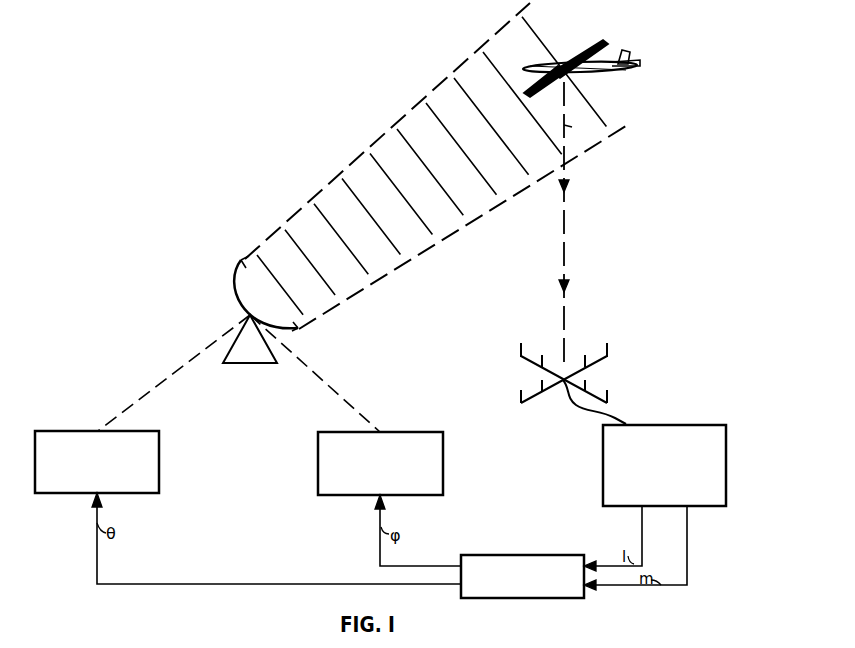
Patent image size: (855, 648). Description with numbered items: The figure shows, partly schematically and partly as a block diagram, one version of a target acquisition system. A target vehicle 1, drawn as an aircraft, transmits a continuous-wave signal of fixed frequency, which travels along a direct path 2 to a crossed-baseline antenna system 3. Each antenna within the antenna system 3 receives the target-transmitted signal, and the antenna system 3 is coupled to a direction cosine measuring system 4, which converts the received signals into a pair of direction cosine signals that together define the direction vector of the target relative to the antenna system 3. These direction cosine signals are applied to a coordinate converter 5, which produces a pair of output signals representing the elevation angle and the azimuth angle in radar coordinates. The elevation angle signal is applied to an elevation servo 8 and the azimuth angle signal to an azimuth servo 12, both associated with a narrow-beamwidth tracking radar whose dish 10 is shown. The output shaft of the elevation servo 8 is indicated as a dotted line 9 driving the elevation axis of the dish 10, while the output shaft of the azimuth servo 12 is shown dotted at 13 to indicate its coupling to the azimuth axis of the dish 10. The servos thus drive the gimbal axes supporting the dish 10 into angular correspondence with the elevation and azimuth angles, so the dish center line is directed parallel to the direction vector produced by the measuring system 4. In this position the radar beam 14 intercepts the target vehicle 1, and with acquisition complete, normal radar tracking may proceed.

The target vehicle 1 is at (610, 62).
The direct path 2 is at (565, 219).
The crossed-baseline antenna system 3 is at (568, 366).
The direction cosine measuring system 4 is at (603, 463).
The coordinate converter 5 is at (508, 555).
The elevation servo 8 is at (160, 459).
The output shaft of elevation servo 9 is at (165, 380).
The radar dish 10 is at (237, 281).
The azimuth servo 12 is at (444, 466).
The output shaft of azimuth servo 13 is at (327, 382).
The radar beam 14 is at (365, 157).